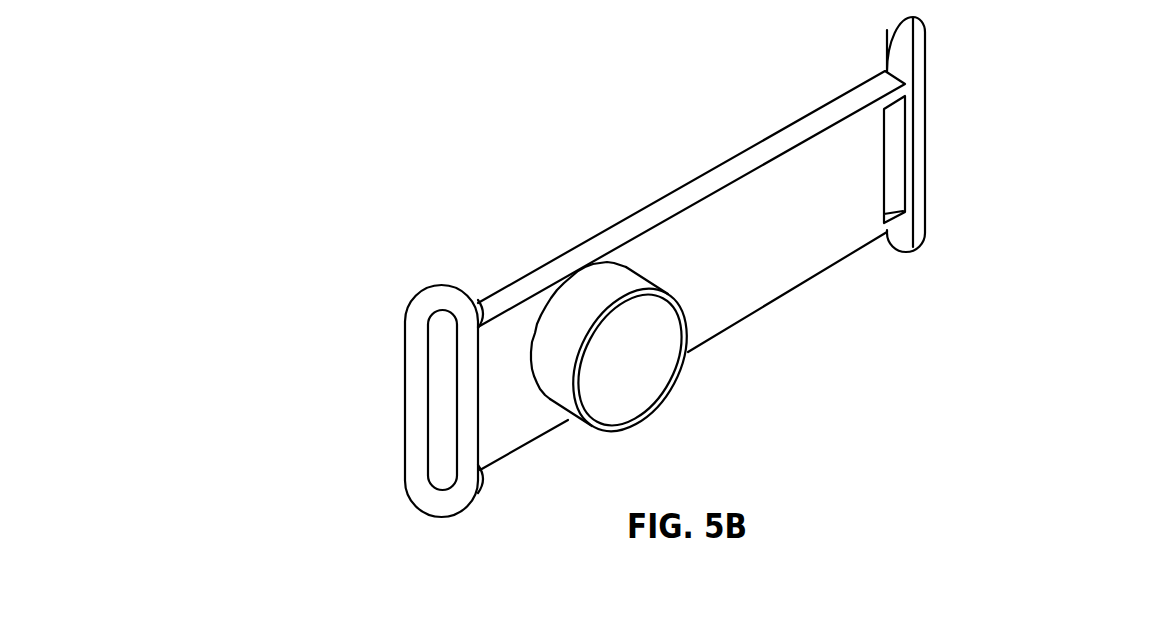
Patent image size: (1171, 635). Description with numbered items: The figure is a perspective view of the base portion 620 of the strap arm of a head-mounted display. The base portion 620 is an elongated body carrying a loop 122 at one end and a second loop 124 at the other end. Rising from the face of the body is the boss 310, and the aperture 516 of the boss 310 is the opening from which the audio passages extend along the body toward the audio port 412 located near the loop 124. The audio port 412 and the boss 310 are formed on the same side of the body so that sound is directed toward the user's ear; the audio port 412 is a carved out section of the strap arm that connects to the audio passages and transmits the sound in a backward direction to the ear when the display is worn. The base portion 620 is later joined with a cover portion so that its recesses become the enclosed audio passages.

The loop 122 is at (418, 410).
The loop 124 is at (916, 18).
The boss 310 is at (583, 298).
The audio port 412 is at (890, 162).
The aperture 516 is at (598, 356).
The base portion 620 is at (822, 334).